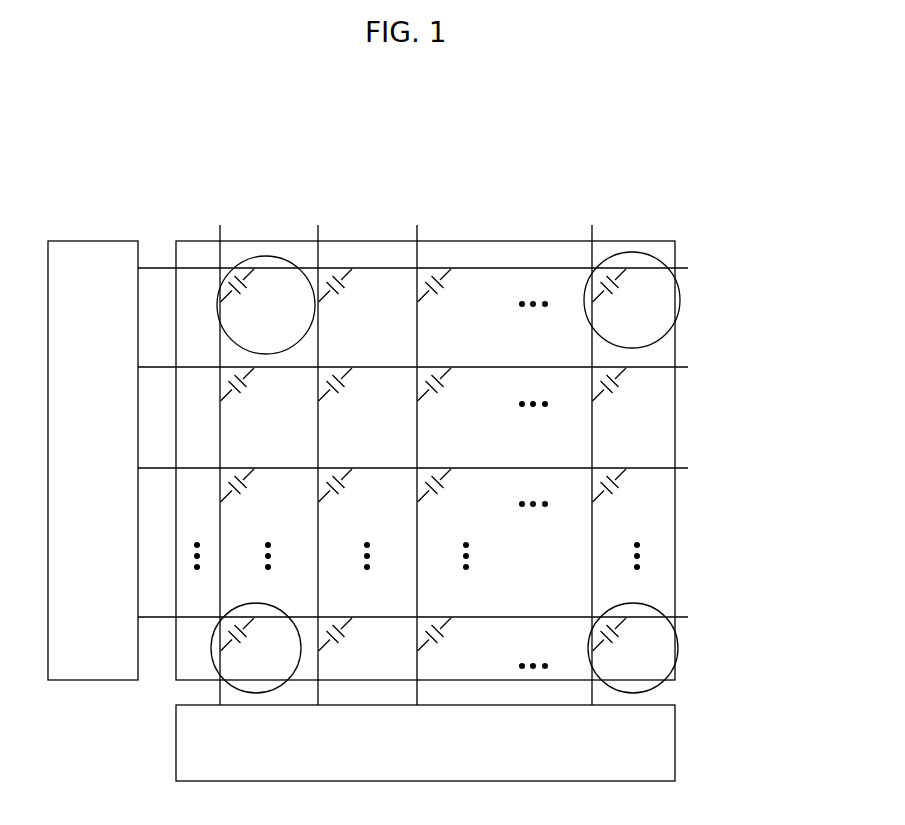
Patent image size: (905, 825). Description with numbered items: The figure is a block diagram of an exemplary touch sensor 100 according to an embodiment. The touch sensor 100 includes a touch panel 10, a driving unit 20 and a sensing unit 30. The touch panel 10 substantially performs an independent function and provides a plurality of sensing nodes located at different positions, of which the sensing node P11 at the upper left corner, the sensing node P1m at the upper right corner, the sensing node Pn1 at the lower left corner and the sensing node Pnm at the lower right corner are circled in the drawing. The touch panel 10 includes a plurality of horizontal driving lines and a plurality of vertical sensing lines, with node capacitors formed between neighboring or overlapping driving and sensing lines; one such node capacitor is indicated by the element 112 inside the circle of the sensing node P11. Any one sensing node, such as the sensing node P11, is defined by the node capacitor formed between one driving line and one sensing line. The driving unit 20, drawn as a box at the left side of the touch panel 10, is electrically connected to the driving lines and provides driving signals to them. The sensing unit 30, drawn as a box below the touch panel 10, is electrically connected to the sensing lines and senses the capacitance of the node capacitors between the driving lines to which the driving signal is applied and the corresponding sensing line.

The touch sensor 100 is at (656, 166).
The touch panel 10 is at (637, 241).
The driving unit 20 is at (92, 232).
The sensing unit 30 is at (676, 743).
The capacitor (sensing node capacitance) 112 is at (238, 300).
The sensing node P11 is at (262, 257).
The sensing node P1m is at (681, 314).
The sensing node Pn1 is at (213, 636).
The sensing node Pnm is at (678, 660).